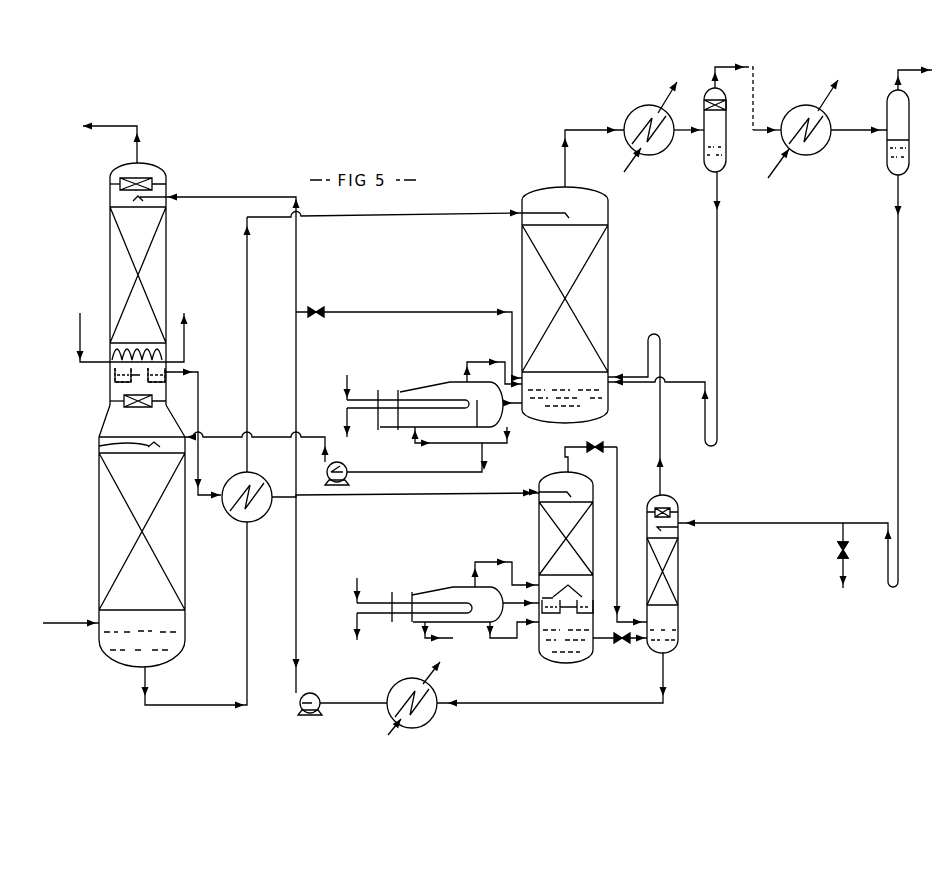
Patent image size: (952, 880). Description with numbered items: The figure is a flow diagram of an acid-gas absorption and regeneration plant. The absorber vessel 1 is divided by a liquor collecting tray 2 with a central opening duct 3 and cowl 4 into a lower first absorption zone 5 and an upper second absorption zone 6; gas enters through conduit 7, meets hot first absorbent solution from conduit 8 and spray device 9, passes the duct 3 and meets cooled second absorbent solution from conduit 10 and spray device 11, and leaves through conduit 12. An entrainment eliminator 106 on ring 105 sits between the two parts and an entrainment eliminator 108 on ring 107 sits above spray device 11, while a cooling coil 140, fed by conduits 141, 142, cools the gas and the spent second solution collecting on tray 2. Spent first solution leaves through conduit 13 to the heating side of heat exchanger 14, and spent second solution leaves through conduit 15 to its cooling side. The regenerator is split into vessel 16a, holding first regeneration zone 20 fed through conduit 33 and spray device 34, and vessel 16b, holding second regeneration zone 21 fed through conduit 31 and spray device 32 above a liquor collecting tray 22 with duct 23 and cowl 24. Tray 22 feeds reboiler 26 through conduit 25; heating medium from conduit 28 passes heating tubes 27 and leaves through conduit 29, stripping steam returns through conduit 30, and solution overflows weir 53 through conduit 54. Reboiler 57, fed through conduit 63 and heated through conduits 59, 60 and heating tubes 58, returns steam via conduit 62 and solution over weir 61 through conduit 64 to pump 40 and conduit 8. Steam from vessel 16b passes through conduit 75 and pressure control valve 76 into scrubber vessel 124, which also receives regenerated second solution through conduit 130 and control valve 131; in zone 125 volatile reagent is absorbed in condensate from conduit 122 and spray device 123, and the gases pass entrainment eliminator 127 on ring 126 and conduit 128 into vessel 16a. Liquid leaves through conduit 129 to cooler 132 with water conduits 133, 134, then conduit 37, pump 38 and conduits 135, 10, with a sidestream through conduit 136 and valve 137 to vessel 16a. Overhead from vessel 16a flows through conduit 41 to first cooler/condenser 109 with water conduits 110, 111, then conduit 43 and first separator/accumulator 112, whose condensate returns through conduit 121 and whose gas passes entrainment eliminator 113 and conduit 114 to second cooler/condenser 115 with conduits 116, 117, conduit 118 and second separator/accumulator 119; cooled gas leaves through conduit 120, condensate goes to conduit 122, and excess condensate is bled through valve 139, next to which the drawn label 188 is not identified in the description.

The absorber vessel 1 is at (174, 413).
The liquor collecting tray 2 is at (122, 384).
The central opening duct 3 is at (140, 375).
The cowl 4 is at (112, 355).
The first absorption zone 5 is at (170, 520).
The second absorption zone 6 is at (168, 258).
The conduit 7 is at (70, 623).
The conduit 8 is at (210, 437).
The spray device 9 is at (130, 447).
The conduit 10 is at (205, 197).
The spray device 11 is at (133, 198).
The conduit 12 is at (138, 148).
The conduit 13 is at (146, 685).
The indirect heat exchanger 14 is at (258, 512).
The conduit 15 is at (186, 368).
The vessel 16a is at (606, 213).
The vessel 16b is at (600, 478).
The first regeneration zone 20 is at (592, 282).
The second regeneration zone 21 is at (548, 537).
The liquor collecting tray 22 is at (590, 636).
The central opening duct 23 is at (570, 608).
The cowl 24 is at (576, 592).
The conduit 25 is at (506, 601).
The reboiler 26 is at (476, 588).
The heating tubes 27 is at (446, 605).
The conduit 28 is at (358, 583).
The conduit 29 is at (358, 636).
The conduit 30 is at (488, 562).
The conduit 31 is at (298, 505).
The spray device 32 is at (560, 494).
The conduit 33 is at (248, 378).
The spray device 34 is at (560, 216).
The conduit 37 is at (348, 703).
The pump 38 is at (318, 710).
The pump 40 is at (345, 465).
The conduit 41 is at (566, 162).
The conduit 43 is at (682, 130).
The weir 53 is at (478, 603).
The conduit 54 is at (493, 635).
The reboiler 57 is at (452, 383).
The heating tubes 58 is at (430, 402).
The conduit 59 is at (348, 380).
The conduit 60 is at (348, 433).
The weir 61 is at (474, 412).
The conduit 62 is at (480, 362).
The conduit 63 is at (440, 443).
The conduit 64 is at (484, 455).
The conduit 75 is at (617, 597).
The pressure control valve 76 is at (597, 448).
The ring 105 is at (112, 401).
The entrainment eliminator 106 is at (152, 395).
The ring 107 is at (112, 184).
The entrainment eliminator 108 is at (152, 178).
The first cooler/condenser 109 is at (626, 115).
The conduit 110 is at (630, 165).
The conduit 111 is at (662, 93).
The first separator/accumulator 112 is at (726, 132).
The entrainment eliminator 113 is at (726, 105).
The conduit 114 is at (747, 99).
The second cooler/condenser 115 is at (802, 108).
The conduit 116 is at (775, 172).
The conduit 117 is at (837, 91).
The conduit 118 is at (850, 133).
The second separator/accumulator 119 is at (909, 122).
The conduit 120 is at (900, 85).
The conduit 121 is at (718, 200).
The conduit 122 is at (899, 205).
The spray device 123 is at (662, 528).
The scrubber vessel 124 is at (676, 505).
The zone 125 is at (672, 565).
The ring 126 is at (655, 510).
The entrainment eliminator 127 is at (647, 527).
The conduit 128 is at (640, 377).
The conduit 129 is at (665, 680).
The conduit 130 is at (600, 640).
The control valve 131 is at (624, 642).
The cooler 132 is at (432, 690).
The conduit 133 is at (384, 719).
The conduit 134 is at (410, 673).
The conduit 135 is at (298, 663).
The conduit 136 is at (350, 312).
The valve 137 is at (316, 316).
The valve 139 is at (848, 550).
The cooling coil 140 is at (110, 343).
The conduit 141 is at (78, 345).
The conduit 142 is at (186, 338).
The drain line 188 is at (845, 578).